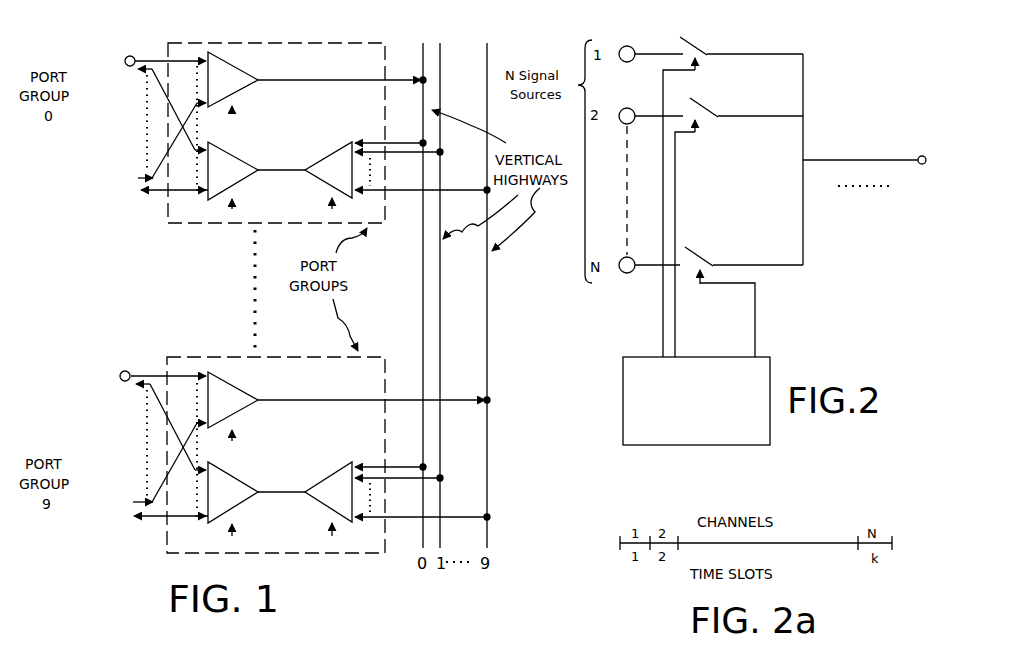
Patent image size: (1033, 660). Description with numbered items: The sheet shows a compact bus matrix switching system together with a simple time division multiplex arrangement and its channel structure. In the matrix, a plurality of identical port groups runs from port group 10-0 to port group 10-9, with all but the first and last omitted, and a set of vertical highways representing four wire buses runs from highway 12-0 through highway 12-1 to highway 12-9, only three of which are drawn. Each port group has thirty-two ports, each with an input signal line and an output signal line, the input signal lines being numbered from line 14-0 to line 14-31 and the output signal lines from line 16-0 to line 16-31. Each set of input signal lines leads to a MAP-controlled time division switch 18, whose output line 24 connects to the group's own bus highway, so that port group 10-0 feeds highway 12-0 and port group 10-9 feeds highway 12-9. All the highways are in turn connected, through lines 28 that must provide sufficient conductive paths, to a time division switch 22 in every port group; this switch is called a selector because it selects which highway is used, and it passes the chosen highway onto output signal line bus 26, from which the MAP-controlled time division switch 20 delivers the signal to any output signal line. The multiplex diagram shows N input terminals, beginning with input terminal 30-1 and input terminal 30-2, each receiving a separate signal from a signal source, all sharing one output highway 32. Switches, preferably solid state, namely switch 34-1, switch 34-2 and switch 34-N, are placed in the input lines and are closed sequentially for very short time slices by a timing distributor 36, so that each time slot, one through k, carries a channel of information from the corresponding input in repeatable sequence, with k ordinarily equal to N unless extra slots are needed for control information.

In FIG. 1, the port group 10-0 is at (353, 40).
In FIG. 1, the port group 10-9 is at (383, 353).
In FIG. 1, the vertical highway 12-0 is at (423, 306).
In FIG. 1, the vertical highway 12-1 is at (441, 305).
In FIG. 1, the vertical highway 12-9 is at (488, 357).
In FIG. 1, the input signal line 14-0 is at (151, 60).
In FIG. 1, the input signal line 14-31 is at (172, 146).
In FIG. 1, the output signal line 16-0 is at (166, 95).
In FIG. 1, the output signal line 16-31 is at (172, 194).
In FIG. 1, the time division switch 18 is at (236, 71).
In FIG. 1, the time division switch 20 is at (239, 161).
In FIG. 1, the time division switch 22 is at (339, 147).
In FIG. 1, the time division switch output line 24 is at (314, 78).
In FIG. 1, the output signal line bus 26 is at (293, 172).
In FIG. 1, the lines 28 is at (413, 146).
In FIG. 2, the input terminal 30-1 is at (641, 38).
In FIG. 2, the input terminal 30-2 is at (631, 108).
In FIG. 1, the output highway 32 is at (139, 288).
In FIG. 2, the output highway 32 is at (900, 158).
In FIG. 2, the switch 34-1 is at (703, 48).
In FIG. 2, the switch 34-2 is at (703, 104).
In FIG. 2, the switch 34-N is at (696, 248).
In FIG. 2, the timing distributor 36 is at (771, 373).